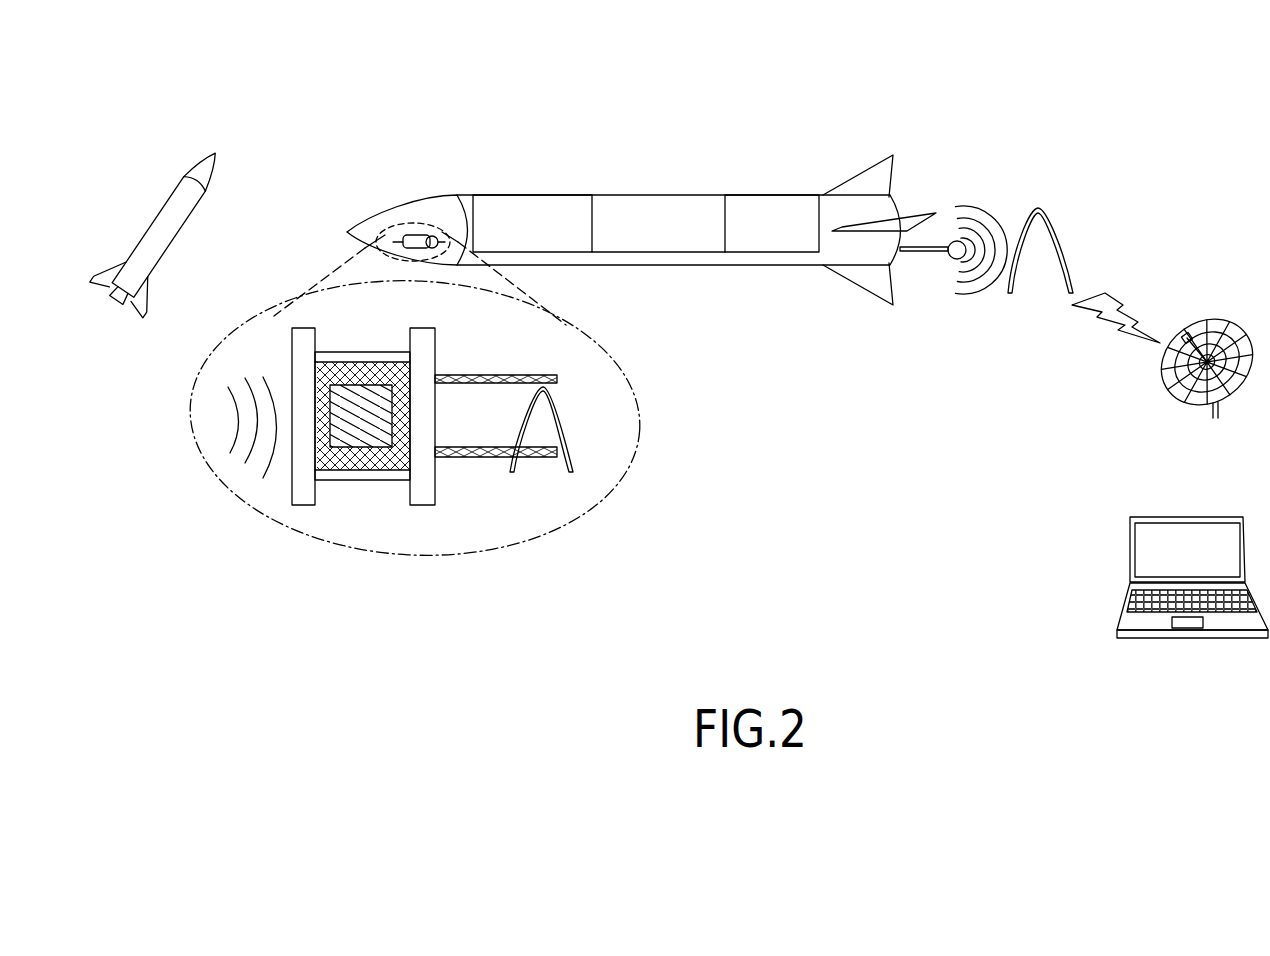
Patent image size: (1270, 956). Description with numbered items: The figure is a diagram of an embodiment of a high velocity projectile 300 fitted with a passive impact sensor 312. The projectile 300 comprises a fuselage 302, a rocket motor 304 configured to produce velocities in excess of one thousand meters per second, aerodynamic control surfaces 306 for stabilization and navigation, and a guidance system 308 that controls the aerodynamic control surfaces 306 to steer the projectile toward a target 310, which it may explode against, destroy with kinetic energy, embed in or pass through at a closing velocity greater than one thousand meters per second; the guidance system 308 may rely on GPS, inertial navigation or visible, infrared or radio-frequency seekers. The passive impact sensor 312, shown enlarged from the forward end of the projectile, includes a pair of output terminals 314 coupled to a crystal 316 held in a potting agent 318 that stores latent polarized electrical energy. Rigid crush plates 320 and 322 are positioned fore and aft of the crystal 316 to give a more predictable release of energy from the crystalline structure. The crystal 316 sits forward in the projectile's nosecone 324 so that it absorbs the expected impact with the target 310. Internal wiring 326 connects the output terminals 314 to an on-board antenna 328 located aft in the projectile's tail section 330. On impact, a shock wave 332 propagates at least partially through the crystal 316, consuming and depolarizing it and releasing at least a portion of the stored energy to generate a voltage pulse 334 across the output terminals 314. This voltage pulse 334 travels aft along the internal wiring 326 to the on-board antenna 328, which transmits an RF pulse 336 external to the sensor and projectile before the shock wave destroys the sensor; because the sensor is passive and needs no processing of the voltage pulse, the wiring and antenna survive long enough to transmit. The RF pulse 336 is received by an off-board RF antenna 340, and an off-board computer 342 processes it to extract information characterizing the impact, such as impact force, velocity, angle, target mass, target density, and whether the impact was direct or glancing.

The high velocity projectile 300 is at (392, 92).
The fuselage 302 is at (612, 195).
The rocket motor 304 is at (752, 195).
The aerodynamic control surfaces 306 is at (868, 170).
The guidance system 308 is at (500, 196).
The target 310 is at (160, 212).
The passive impact sensor 312 is at (572, 518).
The output terminals 314 is at (535, 375).
The crystal 316 is at (355, 438).
The potting agent 318 is at (348, 365).
The rigid crush plate 320 is at (263, 377).
The rigid crush plate 322 is at (303, 505).
The nosecone 324 is at (416, 223).
The internal wiring 326 is at (675, 254).
The on-board antenna 328 is at (925, 257).
The tail section 330 is at (942, 187).
The shock wave 332 is at (230, 400).
The voltage pulse 334 is at (565, 415).
The RF pulse 336 is at (1052, 230).
The off-board RF antenna 340 is at (1158, 385).
The off-board computer 342 is at (1130, 540).